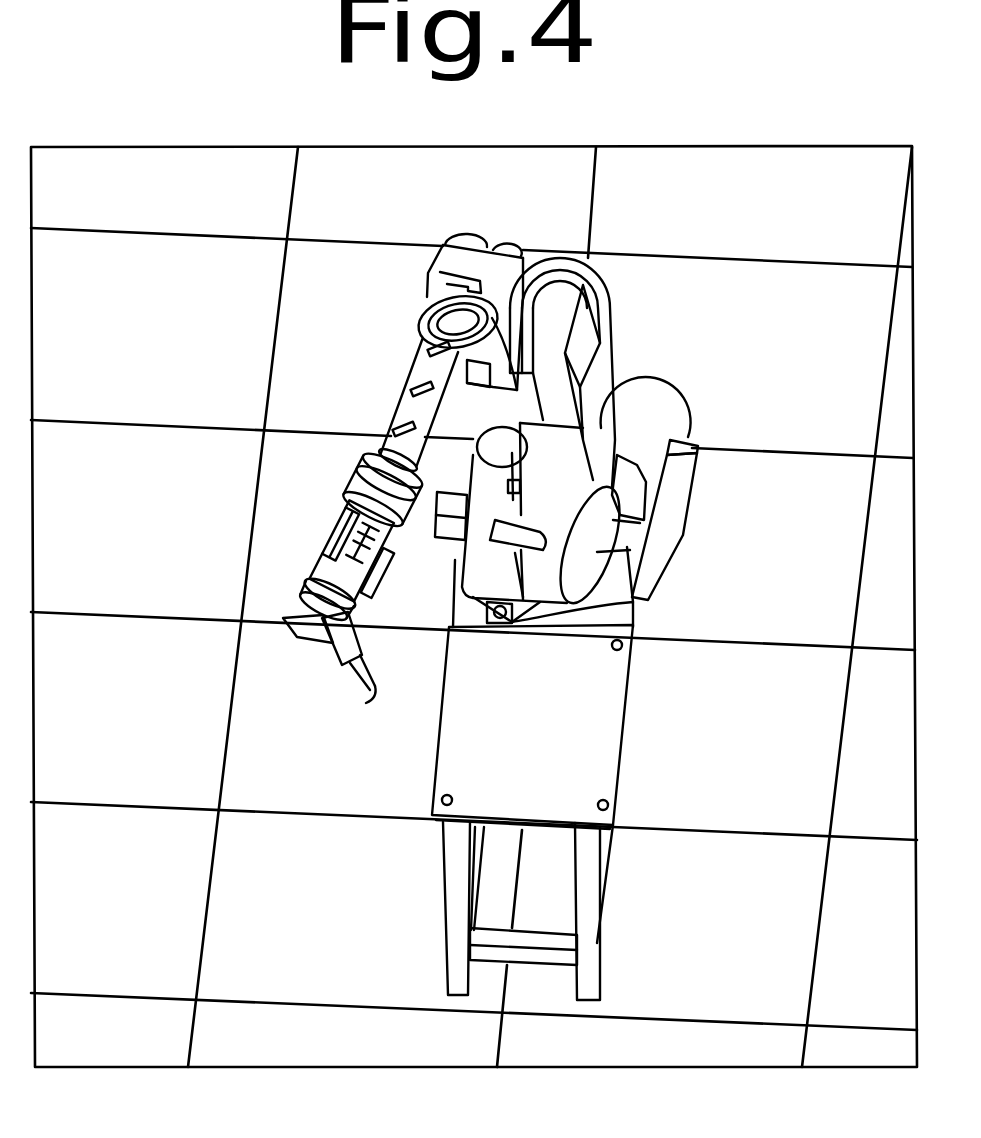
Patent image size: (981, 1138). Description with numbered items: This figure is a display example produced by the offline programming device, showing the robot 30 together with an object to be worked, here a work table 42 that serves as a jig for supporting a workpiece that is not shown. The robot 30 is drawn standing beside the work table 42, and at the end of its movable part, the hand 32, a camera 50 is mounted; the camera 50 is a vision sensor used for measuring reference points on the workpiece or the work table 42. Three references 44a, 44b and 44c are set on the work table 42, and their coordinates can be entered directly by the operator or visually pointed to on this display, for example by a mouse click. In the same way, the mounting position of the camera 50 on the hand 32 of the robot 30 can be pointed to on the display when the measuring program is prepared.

The robot 30 is at (650, 322).
The hand 32 is at (323, 532).
The camera 50 is at (343, 650).
The work table 42 is at (457, 724).
The reference 44a is at (612, 804).
The reference 44b is at (627, 647).
The reference 44c is at (440, 800).